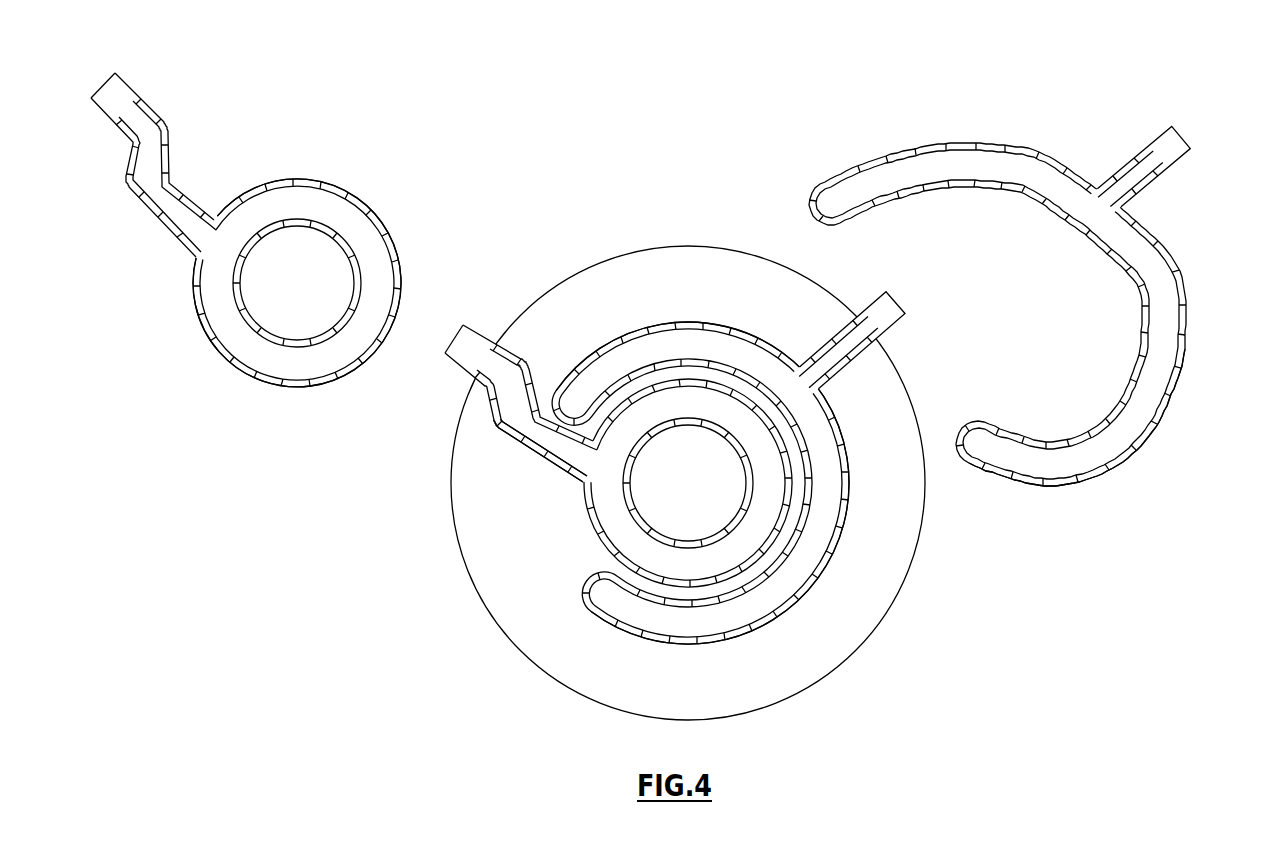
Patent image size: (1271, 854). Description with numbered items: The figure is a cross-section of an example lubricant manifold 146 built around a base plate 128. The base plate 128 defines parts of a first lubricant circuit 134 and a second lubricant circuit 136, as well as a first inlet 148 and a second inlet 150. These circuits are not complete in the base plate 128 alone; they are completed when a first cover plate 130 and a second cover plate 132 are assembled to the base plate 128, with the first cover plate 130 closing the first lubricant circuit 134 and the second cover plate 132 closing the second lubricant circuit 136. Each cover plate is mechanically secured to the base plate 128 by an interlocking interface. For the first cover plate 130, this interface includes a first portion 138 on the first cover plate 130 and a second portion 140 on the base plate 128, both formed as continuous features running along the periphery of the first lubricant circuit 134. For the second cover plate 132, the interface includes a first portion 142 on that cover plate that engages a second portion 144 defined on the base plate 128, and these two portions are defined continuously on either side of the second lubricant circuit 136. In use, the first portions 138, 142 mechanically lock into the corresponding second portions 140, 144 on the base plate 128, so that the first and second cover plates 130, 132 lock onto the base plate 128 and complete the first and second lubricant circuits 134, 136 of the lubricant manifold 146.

The base plate 128 is at (827, 637).
The first cover plate 130 is at (1165, 302).
The second cover plate 132 is at (381, 257).
The first lubricant circuit 134 is at (825, 433).
The second lubricant circuit 136 is at (659, 408).
The first portion 138 is at (1097, 480).
The second portion 140 is at (843, 525).
The first portion 142 is at (266, 385).
The second portion 144 is at (583, 501).
The lubricant manifold 146 is at (850, 100).
The first inlet 148 is at (888, 310).
The second inlet 150 is at (462, 345).